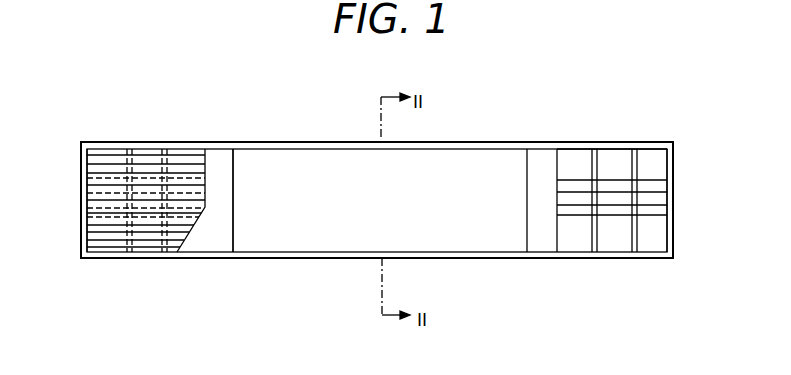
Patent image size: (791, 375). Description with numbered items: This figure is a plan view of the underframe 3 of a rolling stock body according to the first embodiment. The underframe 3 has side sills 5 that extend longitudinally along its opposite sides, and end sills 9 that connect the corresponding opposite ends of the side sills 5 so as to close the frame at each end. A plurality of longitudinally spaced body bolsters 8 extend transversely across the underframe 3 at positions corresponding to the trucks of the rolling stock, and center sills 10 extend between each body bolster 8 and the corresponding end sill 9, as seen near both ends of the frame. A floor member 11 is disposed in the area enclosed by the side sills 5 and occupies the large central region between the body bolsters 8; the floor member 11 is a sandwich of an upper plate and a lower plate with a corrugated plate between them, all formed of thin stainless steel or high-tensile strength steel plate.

The underframe 3 is at (438, 143).
The side sills 5 is at (620, 141).
The body bolsters 8 is at (223, 232).
The end sills 9 is at (82, 237).
The center sills 10 is at (148, 252).
The floor member 11 is at (492, 163).